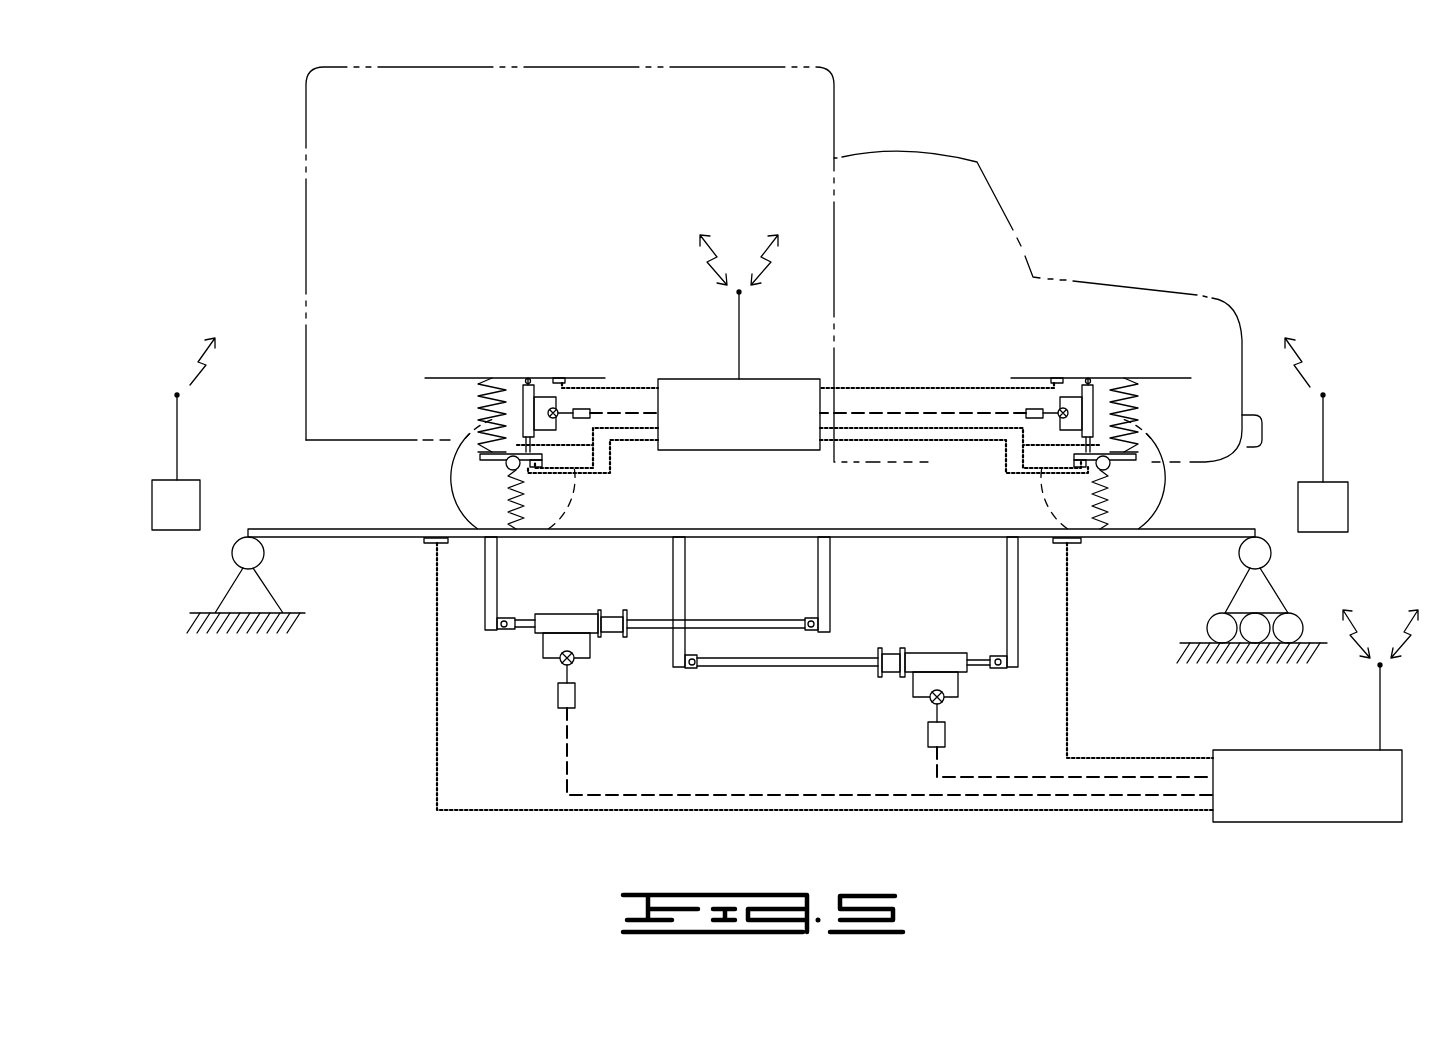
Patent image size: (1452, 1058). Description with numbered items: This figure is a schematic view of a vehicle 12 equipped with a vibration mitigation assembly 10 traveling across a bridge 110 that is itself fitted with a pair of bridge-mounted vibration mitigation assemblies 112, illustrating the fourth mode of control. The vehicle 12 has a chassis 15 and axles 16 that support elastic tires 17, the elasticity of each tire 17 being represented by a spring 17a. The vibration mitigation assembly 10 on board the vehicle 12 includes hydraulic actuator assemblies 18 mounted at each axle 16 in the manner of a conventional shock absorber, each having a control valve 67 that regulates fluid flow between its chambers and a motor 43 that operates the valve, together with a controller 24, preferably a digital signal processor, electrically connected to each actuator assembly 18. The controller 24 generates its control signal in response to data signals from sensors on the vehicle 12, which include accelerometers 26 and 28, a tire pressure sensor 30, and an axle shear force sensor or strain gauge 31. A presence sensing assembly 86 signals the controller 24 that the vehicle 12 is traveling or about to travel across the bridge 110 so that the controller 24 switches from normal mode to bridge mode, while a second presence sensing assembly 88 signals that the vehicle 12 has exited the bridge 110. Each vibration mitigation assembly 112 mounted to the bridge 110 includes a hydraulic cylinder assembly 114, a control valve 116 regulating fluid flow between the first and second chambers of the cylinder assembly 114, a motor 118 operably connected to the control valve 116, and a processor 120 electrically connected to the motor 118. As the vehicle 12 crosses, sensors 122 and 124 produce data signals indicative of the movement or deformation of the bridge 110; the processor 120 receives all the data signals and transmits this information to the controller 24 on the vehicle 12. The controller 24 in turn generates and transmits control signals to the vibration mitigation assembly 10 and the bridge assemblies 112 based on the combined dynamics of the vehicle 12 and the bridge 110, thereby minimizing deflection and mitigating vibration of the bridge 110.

The vibration mitigation assembly 10 is at (739, 368).
The vehicle 12 is at (1003, 196).
The chassis 15 is at (448, 376).
The axle 16 is at (490, 459).
The elastic tire 17 is at (469, 510).
The spring 17a is at (528, 525).
The hydraulic actuator assembly 18 is at (517, 391).
The controller 24 is at (723, 450).
The accelerometer 26 is at (527, 464).
The accelerometer 28 is at (560, 381).
The tire pressure sensor 30 is at (540, 505).
The axle shear force sensor or strain gauge 31 is at (482, 443).
The motor 43 is at (586, 420).
The control valve 67 is at (547, 392).
The presence sensing assembly 86 is at (200, 500).
The second presence sensing assembly 88 is at (1298, 497).
The bridge 110 is at (377, 540).
The vibration mitigation assembly 112 is at (534, 634).
The hydraulic cylinder assembly 114 is at (579, 611).
The control valve 116 is at (560, 665).
The motor 118 is at (575, 702).
The processor 120 is at (1285, 823).
The sensor 122 is at (426, 543).
The sensor 124 is at (1075, 543).